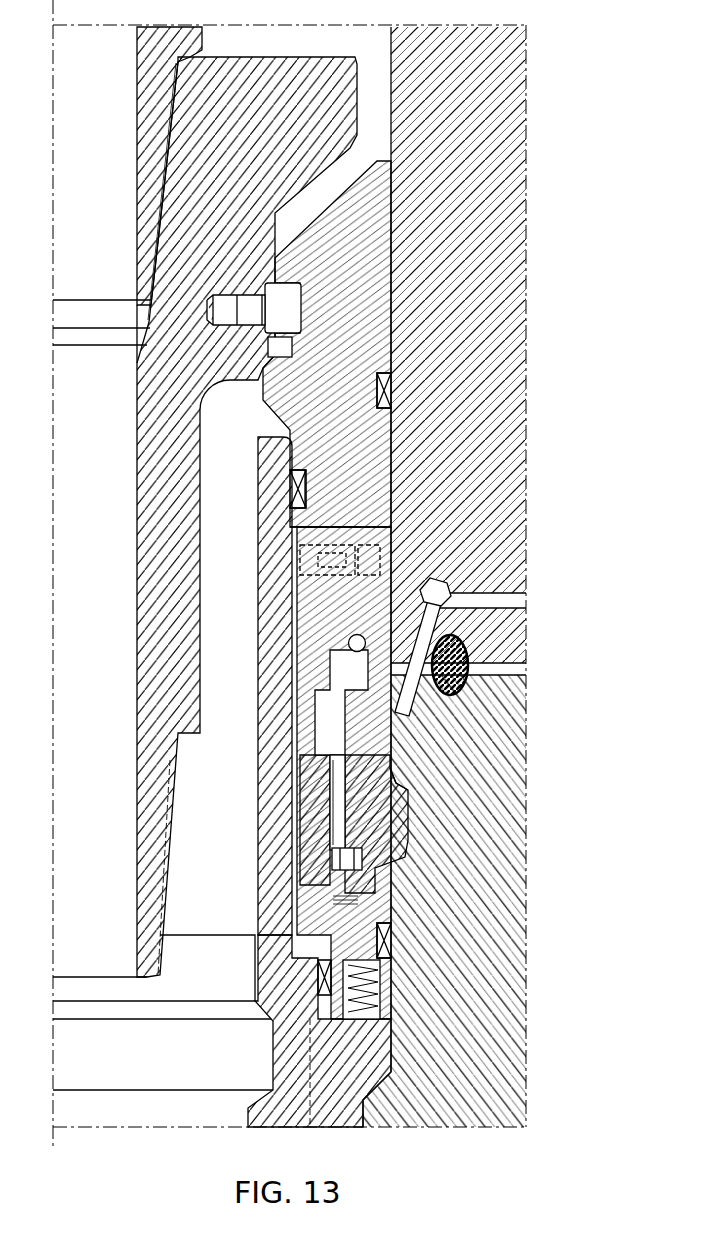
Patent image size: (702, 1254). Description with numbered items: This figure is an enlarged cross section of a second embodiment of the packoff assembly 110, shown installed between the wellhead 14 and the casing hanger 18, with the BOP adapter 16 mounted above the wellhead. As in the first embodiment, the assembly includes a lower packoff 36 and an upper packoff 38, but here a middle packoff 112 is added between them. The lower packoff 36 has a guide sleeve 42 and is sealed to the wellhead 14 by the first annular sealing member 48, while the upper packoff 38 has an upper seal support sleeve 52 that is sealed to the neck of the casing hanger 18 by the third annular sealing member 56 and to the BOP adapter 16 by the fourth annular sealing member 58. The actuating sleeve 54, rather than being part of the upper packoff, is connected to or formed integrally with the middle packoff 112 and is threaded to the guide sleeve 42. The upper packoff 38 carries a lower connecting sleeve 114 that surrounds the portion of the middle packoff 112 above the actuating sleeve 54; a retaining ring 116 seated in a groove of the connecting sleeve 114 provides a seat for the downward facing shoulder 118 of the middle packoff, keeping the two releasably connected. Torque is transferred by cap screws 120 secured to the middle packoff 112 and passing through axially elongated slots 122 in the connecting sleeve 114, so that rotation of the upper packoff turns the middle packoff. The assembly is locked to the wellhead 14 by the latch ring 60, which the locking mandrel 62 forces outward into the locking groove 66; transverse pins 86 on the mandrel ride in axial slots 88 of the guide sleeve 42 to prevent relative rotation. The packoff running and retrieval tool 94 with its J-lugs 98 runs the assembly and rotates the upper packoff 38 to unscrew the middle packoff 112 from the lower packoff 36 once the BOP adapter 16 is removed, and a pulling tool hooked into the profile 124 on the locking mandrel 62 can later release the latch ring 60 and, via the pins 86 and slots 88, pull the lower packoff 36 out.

The wellhead 14 is at (502, 1108).
The BOP adapter 16 is at (481, 190).
The casing hanger 18 is at (372, 1100).
The lower packoff 36 is at (397, 1003).
The upper packoff 38 is at (394, 450).
The guide sleeve 42 is at (305, 838).
The first annular sealing member 48 is at (393, 941).
The upper seal support sleeve 52 is at (386, 307).
The actuating sleeve 54 is at (305, 792).
The third annular sealing member 56 is at (296, 489).
The fourth annular sealing member 58 is at (393, 390).
The latch ring 60 is at (398, 846).
The locking mandrel 62 is at (383, 772).
The locking groove 66 is at (398, 822).
The transverse pins 86 is at (362, 860).
The axial slots 88 is at (340, 800).
The packoff running and retrieval tool 94 is at (366, 95).
The J-lugs 98 is at (303, 306).
The packoff assembly 110 is at (516, 880).
The middle packoff 112 is at (301, 585).
The connecting sleeve 114 is at (394, 615).
The retaining ring 116 is at (340, 665).
The downward facing shoulder 118 is at (349, 640).
The cap screws 120 is at (373, 561).
The axially elongated slots 122 is at (379, 541).
The profile 124 is at (397, 702).